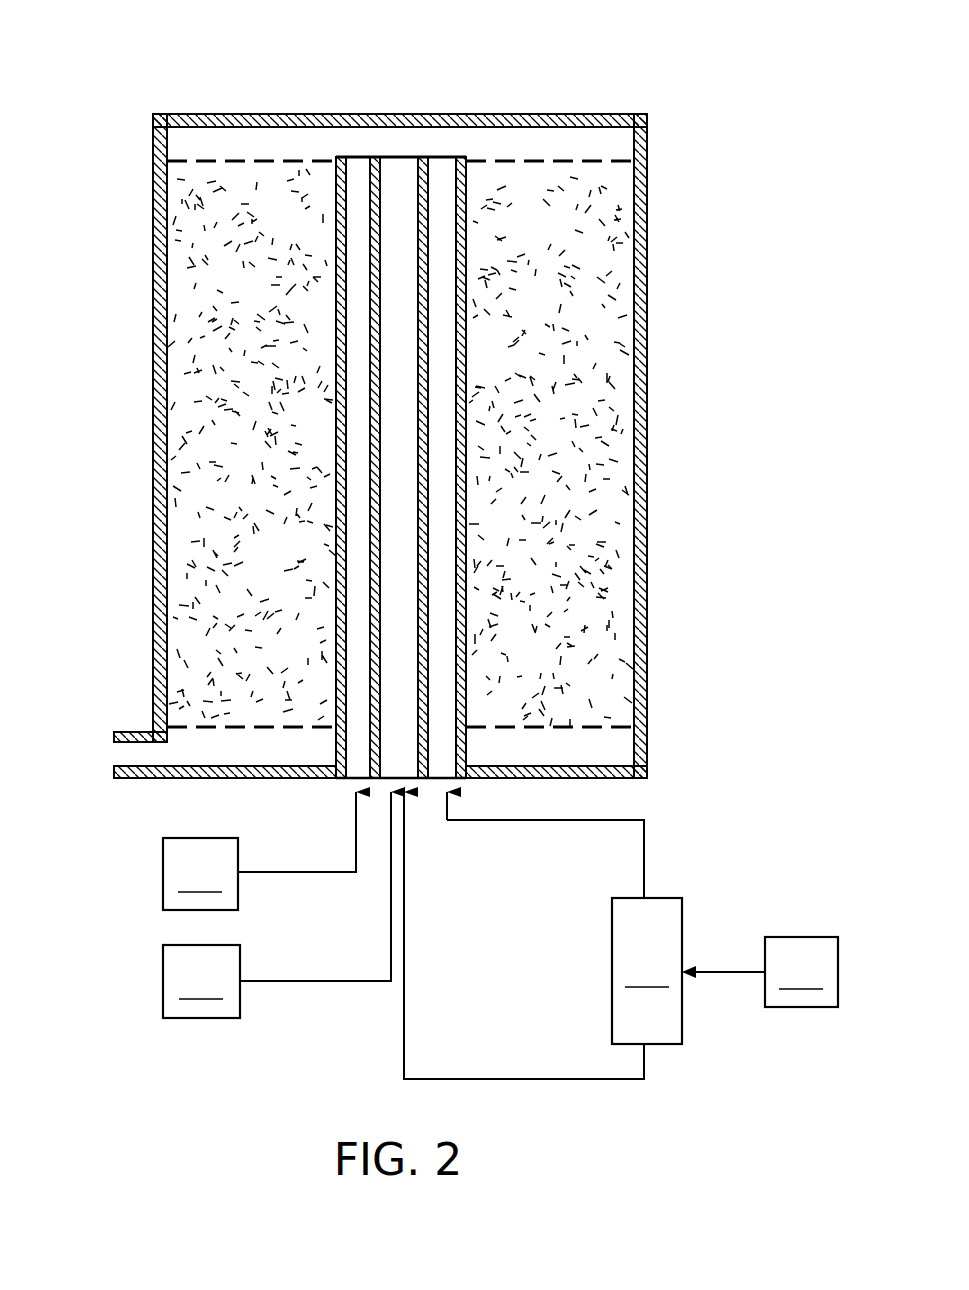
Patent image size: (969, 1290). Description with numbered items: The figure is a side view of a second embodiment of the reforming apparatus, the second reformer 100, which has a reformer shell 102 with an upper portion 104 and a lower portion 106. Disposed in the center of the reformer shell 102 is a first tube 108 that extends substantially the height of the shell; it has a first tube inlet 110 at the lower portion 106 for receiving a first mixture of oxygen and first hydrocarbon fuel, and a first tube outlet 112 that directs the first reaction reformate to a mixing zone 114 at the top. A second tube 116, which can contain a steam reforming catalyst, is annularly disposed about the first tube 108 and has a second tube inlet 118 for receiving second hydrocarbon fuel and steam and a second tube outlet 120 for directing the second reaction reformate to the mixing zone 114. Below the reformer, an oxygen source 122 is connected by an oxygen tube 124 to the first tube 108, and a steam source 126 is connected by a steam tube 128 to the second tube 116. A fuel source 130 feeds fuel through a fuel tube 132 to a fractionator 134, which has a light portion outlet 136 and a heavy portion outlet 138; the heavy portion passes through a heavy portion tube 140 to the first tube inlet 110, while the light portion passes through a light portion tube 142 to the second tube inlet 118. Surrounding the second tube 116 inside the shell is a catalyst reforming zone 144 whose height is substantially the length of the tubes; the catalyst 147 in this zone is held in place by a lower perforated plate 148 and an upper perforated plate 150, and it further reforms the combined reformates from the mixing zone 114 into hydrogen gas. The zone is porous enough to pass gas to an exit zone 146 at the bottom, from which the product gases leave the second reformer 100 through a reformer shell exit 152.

The second reformer 100 is at (120, 116).
The reformer shell 102 is at (647, 490).
The upper portion 104 is at (647, 201).
The lower portion 106 is at (647, 691).
The first tube 108 is at (333, 703).
The first tube inlet 110 is at (408, 781).
The first tube outlet 112 is at (402, 156).
The mixing zone 114 is at (531, 142).
The second tube 116 is at (341, 745).
The second tube inlet 118 is at (352, 792).
The second tube outlet 120 is at (356, 156).
The oxygen source 122 is at (201, 981).
The oxygen tube 124 is at (283, 982).
The steam source 126 is at (200, 874).
The steam tube 128 is at (281, 877).
The fuel source 130 is at (801, 972).
The fuel tube 132 is at (720, 972).
The fractionator 134 is at (647, 971).
The light portion outlet 136 is at (647, 898).
The heavy portion outlet 138 is at (648, 1047).
The heavy portion tube 140 is at (507, 1079).
The light portion tube 142 is at (569, 820).
The catalyst reforming zone 144 is at (593, 342).
The exit zone 146 is at (612, 748).
The catalyst 147 is at (207, 330).
The lower perforated plate 148 is at (197, 724).
The upper perforated plate 150 is at (202, 160).
The reformer shell exit 152 is at (115, 752).